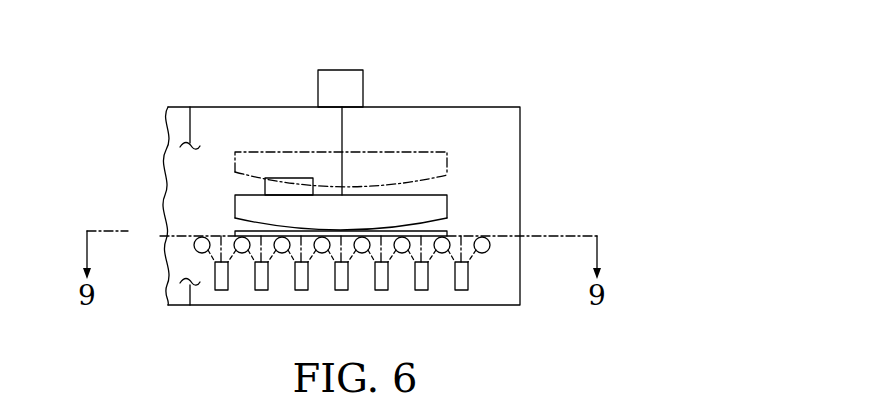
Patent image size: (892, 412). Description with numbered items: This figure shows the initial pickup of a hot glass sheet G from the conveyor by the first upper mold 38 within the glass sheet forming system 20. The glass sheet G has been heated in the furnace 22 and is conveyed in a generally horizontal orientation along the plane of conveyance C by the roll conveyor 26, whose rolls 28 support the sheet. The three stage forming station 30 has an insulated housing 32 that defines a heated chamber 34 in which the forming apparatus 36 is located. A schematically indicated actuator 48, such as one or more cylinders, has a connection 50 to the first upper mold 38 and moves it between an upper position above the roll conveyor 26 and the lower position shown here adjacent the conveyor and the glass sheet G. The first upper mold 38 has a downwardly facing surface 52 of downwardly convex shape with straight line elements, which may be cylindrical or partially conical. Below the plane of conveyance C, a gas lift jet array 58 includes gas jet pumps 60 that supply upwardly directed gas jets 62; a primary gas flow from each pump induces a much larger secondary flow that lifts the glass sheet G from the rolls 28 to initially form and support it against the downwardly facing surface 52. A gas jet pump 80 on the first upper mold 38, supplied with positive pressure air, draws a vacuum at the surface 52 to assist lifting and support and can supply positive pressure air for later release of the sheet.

The glass sheet forming system 20 is at (190, 68).
The furnace 22 is at (178, 107).
The conveyor 26 is at (190, 244).
The rolls 28 is at (278, 253).
The three stage forming station 30 is at (445, 64).
The insulated housing 32 is at (468, 106).
The heated chamber 34 is at (445, 118).
The forming apparatus 36 is at (460, 130).
The first upper mold 38 is at (448, 166).
The actuator 48 is at (318, 90).
The connection 50 is at (342, 128).
The downwardly facing surface 52 is at (455, 202).
The gas lift jet array 58 is at (473, 275).
The gas jet pumps 60 is at (388, 283).
The upwardly directed gas jets 62 is at (312, 254).
The gas jet pump 80 is at (290, 178).
The plane of conveyance C is at (502, 235).
The glass sheet G is at (240, 230).